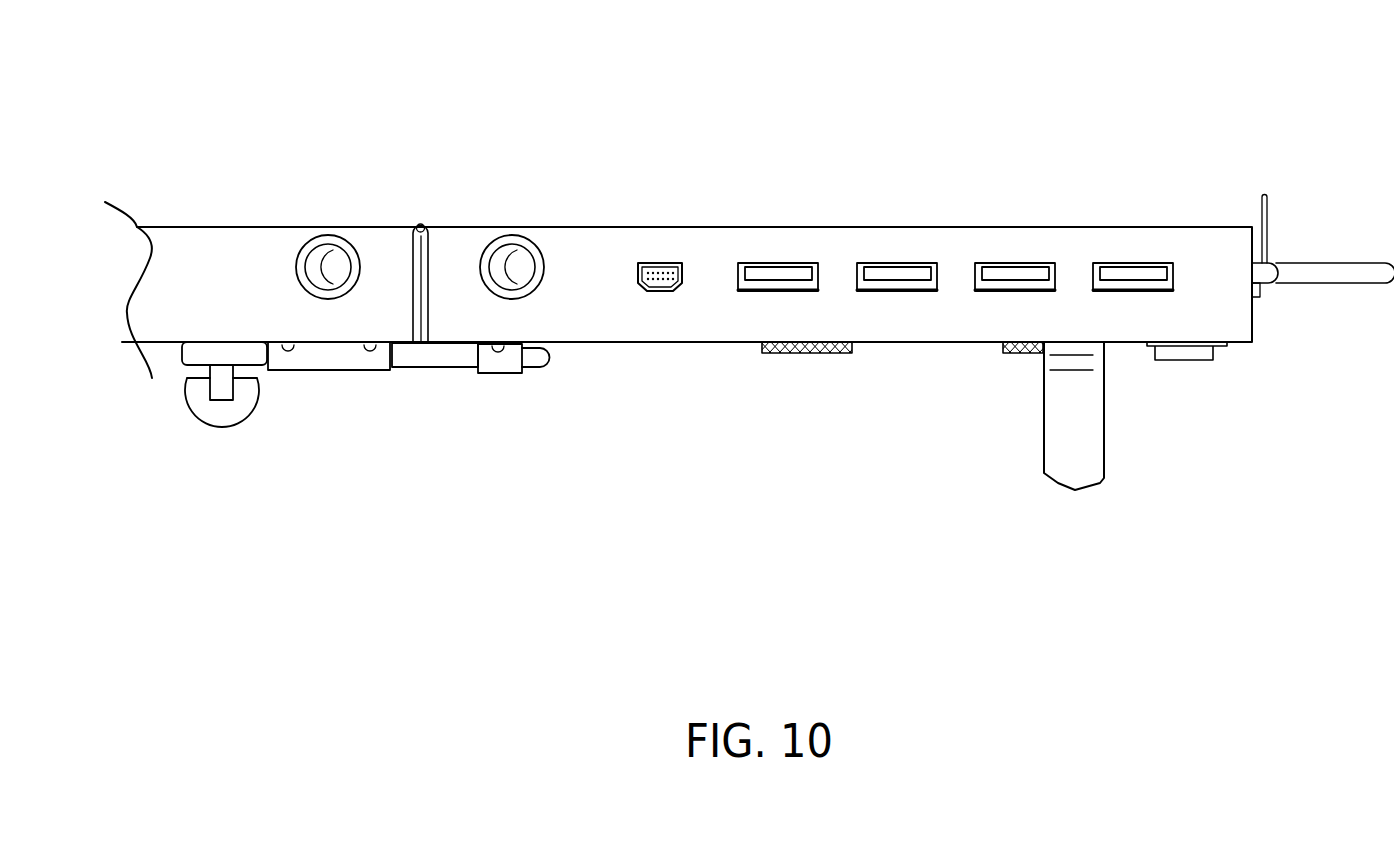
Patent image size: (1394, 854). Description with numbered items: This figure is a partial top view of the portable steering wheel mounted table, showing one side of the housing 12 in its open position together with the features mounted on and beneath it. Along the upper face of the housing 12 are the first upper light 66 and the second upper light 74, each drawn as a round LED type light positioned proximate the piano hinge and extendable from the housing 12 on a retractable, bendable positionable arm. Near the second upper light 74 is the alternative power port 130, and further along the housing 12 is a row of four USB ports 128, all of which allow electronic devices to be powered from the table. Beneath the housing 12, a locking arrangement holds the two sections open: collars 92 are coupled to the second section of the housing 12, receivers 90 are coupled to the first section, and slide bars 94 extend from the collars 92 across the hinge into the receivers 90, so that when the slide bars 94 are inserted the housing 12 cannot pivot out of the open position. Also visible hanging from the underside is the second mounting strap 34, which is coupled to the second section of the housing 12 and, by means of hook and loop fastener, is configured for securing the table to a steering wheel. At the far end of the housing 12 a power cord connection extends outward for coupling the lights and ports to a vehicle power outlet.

The housing 12 is at (1230, 240).
The second mounting strap 34 is at (1100, 427).
The first upper light 66 is at (336, 250).
The second upper light 74 is at (515, 252).
The receivers 90 is at (507, 365).
The collars 92 is at (330, 363).
The slide bars 94 is at (438, 365).
The USB ports 128 is at (888, 270).
The alternative power port 130 is at (665, 268).